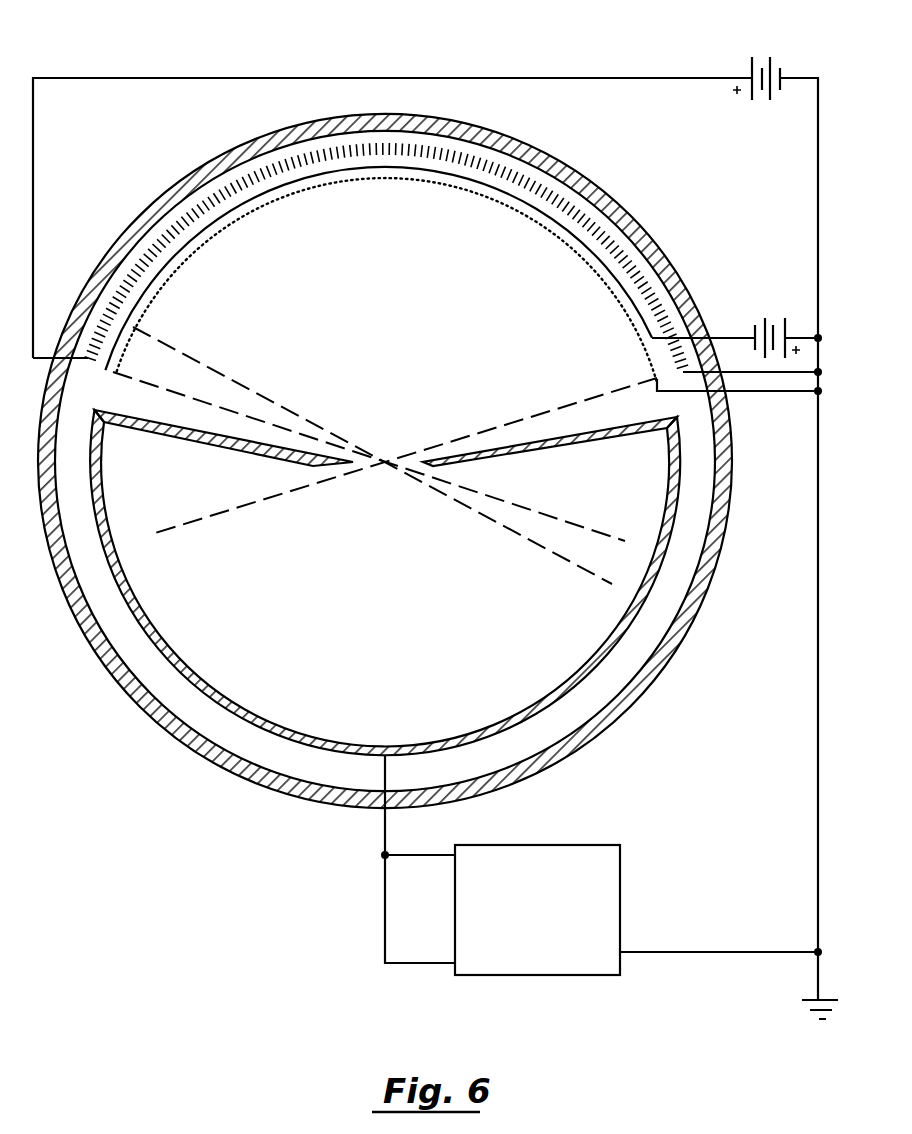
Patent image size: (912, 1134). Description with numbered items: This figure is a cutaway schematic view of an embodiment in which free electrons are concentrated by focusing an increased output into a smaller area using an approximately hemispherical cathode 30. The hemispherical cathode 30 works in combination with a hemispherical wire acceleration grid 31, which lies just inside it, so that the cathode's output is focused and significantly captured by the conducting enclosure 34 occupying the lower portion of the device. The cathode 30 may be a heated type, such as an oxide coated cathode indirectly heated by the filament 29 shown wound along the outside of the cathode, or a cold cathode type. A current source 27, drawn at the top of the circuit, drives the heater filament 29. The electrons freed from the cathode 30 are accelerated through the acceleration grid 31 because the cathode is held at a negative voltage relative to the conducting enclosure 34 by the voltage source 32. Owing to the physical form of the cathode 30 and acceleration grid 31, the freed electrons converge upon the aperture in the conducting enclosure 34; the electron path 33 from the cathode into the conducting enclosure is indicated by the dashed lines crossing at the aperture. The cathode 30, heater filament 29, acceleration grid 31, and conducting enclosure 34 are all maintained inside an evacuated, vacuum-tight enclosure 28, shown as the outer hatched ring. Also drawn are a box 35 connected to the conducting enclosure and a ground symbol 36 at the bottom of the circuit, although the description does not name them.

The current source 27 is at (752, 62).
The vacuum-tight enclosure 28 is at (588, 180).
The heater filament 29 is at (605, 233).
The hemispherical cathode 30 is at (607, 272).
The acceleration grid 31 is at (630, 315).
The voltage source 32 is at (772, 325).
The electron path 33 is at (562, 520).
The conducting enclosure 34 is at (596, 652).
The control unit 35 is at (620, 872).
The ground 36 is at (815, 1010).